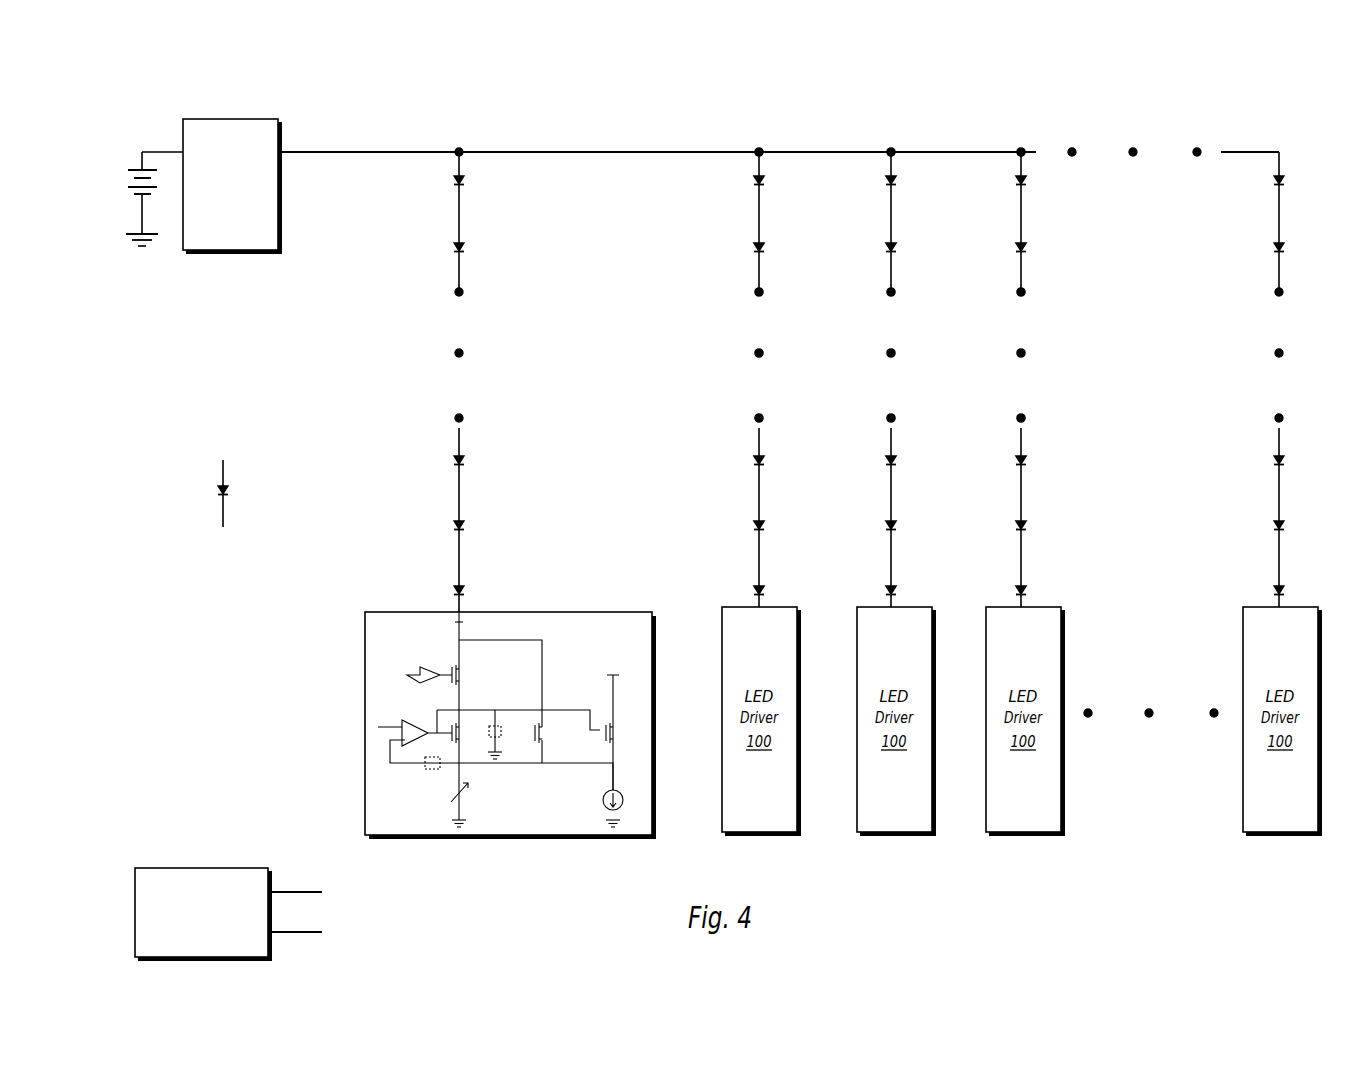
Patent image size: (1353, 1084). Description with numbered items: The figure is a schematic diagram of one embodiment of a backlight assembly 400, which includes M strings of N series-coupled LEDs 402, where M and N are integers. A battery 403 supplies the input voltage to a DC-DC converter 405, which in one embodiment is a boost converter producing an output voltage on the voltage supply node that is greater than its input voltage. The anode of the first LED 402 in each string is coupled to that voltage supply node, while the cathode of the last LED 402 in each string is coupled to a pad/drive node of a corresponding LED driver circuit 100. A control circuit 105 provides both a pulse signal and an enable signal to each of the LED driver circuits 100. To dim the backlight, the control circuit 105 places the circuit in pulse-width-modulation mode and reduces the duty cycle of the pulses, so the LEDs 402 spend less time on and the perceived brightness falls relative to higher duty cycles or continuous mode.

The backlight assembly 400 is at (773, 73).
The LED 402 is at (223, 450).
The battery 403 is at (142, 140).
The DC-DC converter 405 is at (218, 213).
The LED driver circuit 100 is at (586, 804).
The control circuit 105 is at (187, 934).